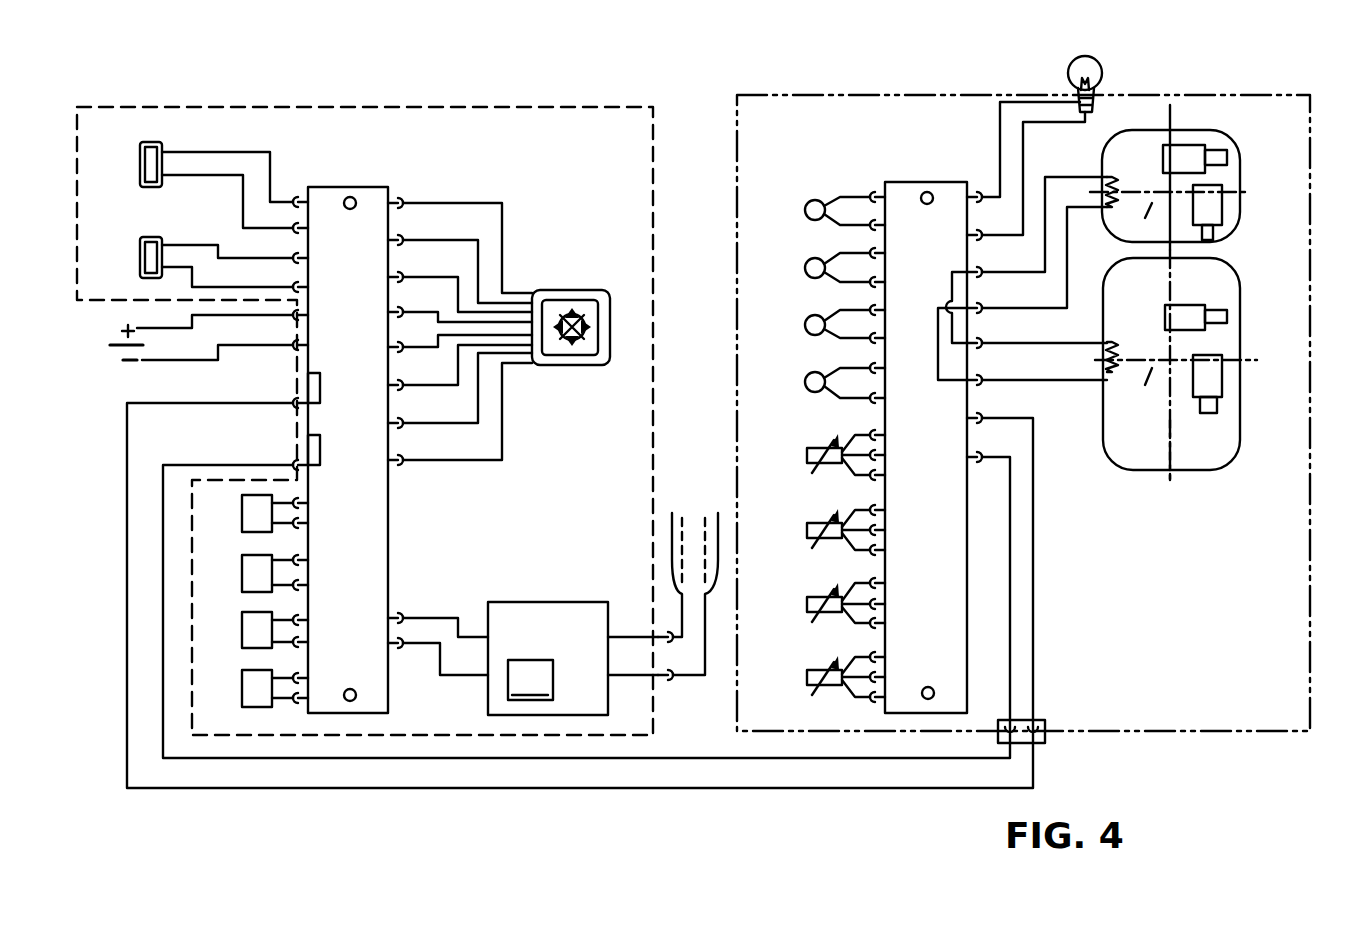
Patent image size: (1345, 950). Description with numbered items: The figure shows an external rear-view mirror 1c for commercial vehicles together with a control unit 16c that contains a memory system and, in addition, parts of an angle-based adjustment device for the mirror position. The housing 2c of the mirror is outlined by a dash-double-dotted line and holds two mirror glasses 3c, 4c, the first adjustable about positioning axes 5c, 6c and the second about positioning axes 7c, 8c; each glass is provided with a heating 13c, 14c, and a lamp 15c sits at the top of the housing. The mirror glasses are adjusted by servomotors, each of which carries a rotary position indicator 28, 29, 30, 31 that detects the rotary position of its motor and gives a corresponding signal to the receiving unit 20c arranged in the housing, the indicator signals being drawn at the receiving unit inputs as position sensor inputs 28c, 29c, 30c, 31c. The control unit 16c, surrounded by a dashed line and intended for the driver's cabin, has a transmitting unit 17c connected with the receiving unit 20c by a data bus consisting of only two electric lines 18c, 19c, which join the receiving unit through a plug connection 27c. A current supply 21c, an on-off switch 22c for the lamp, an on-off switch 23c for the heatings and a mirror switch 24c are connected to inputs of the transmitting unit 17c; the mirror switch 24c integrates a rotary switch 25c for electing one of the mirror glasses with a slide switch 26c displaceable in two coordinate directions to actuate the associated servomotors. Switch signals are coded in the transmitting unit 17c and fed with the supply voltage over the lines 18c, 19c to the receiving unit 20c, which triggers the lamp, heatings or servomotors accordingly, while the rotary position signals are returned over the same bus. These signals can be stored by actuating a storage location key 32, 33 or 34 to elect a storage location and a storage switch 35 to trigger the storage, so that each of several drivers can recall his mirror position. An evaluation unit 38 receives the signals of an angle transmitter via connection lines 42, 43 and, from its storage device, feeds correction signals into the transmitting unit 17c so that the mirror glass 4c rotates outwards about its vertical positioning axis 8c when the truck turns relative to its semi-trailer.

The external rear-view mirror 1c is at (1236, 92).
The housing 2c is at (925, 95).
The mirror glass 3c is at (1148, 174).
The mirror glass 4c is at (1148, 296).
The positioning axis 5c is at (1144, 222).
The positioning axis 6c is at (1165, 113).
The positioning axis 7c is at (1144, 392).
The positioning axis 8c is at (1172, 425).
The heating 13c is at (1111, 180).
The heating 14c is at (1114, 380).
The lamp 15c is at (1068, 68).
The control unit 16c is at (350, 100).
The transmitting unit 17c is at (368, 526).
The electric line 18c is at (683, 790).
The electric line 19c is at (685, 756).
The receiving unit 20c is at (947, 526).
The current supply 21c is at (180, 337).
The on-off switch 22c is at (143, 255).
The on-off switch 23c is at (143, 165).
The mirror switch 24c is at (519, 331).
The rotary switch 25c is at (556, 310).
The slide switch 26c is at (592, 316).
The plug connection 27c is at (1045, 743).
The rotary position indicator 28 is at (1227, 158).
The rotary position indicator 29 is at (1213, 234).
The rotary position indicator 30 is at (1227, 316).
The rotary position indicator 31 is at (1215, 405).
The storage location key 32 is at (256, 580).
The storage location key 33 is at (257, 638).
The storage location key 34 is at (257, 697).
The storage switch 35 is at (255, 518).
The evaluation unit 38 is at (560, 634).
The connection line 42 is at (703, 580).
The connection line 43 is at (672, 561).
The position sensor input 28c is at (807, 455).
The position sensor input 29c is at (807, 530).
The position sensor input 30c is at (807, 604).
The position sensor input 31c is at (807, 677).